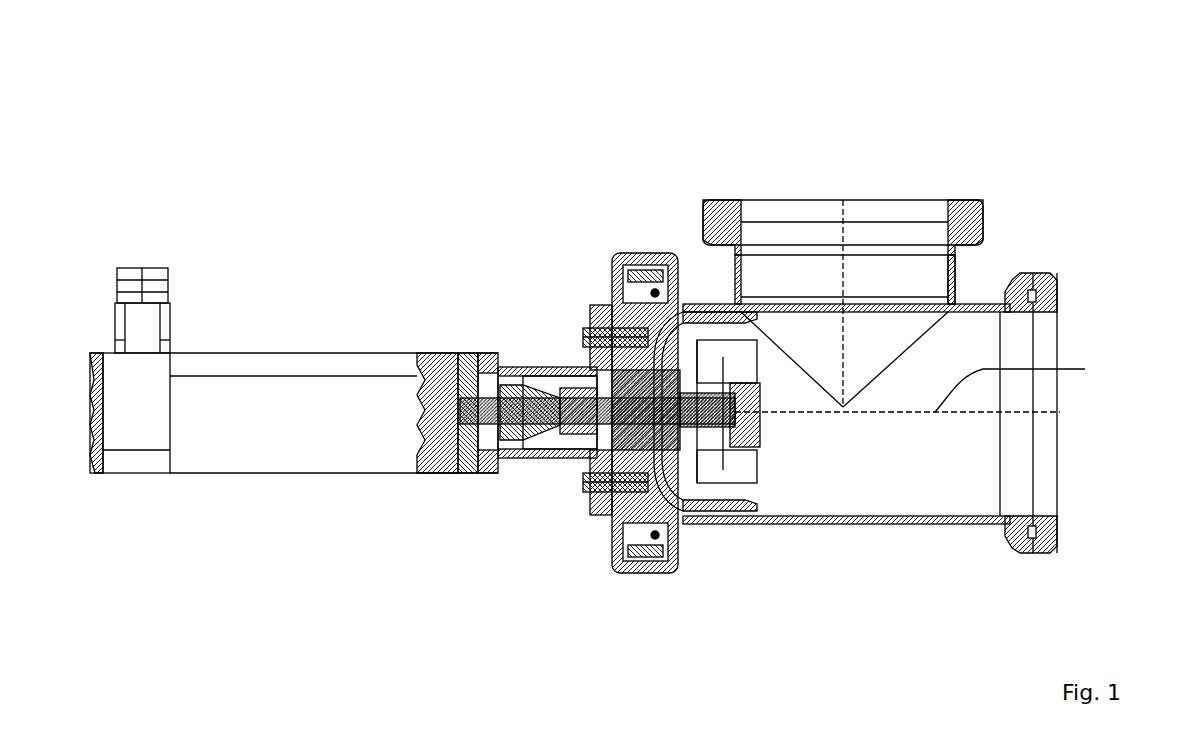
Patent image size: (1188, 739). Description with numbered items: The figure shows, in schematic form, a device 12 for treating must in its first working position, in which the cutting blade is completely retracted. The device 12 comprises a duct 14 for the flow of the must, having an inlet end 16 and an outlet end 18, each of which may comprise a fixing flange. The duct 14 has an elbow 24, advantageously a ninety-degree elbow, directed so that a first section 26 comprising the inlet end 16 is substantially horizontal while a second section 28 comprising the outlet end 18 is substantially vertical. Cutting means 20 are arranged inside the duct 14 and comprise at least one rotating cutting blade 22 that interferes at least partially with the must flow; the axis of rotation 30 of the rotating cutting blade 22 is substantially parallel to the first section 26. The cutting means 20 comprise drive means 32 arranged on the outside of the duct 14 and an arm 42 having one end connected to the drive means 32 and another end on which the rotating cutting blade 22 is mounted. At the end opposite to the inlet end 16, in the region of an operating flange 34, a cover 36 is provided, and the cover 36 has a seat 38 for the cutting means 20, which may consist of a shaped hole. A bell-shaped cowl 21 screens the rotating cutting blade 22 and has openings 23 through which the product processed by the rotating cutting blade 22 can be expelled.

The device for treating must 12 is at (605, 216).
The duct 14 is at (898, 362).
The inlet end 16 is at (1058, 482).
The outlet end 18 is at (773, 198).
The cutting means 20 is at (759, 362).
The bell-shaped cowl 21 is at (730, 505).
The rotating cutting blade 22 is at (728, 462).
The openings 23 is at (752, 485).
The elbow 24 is at (953, 290).
The first section 26 is at (1049, 595).
The second section 28 is at (1072, 180).
The axis of rotation 30 is at (1028, 388).
The drive means 32 is at (352, 492).
The operating flange 34 is at (655, 292).
The cover 36 is at (612, 285).
The seat 38 is at (597, 365).
The arm 42 is at (565, 368).